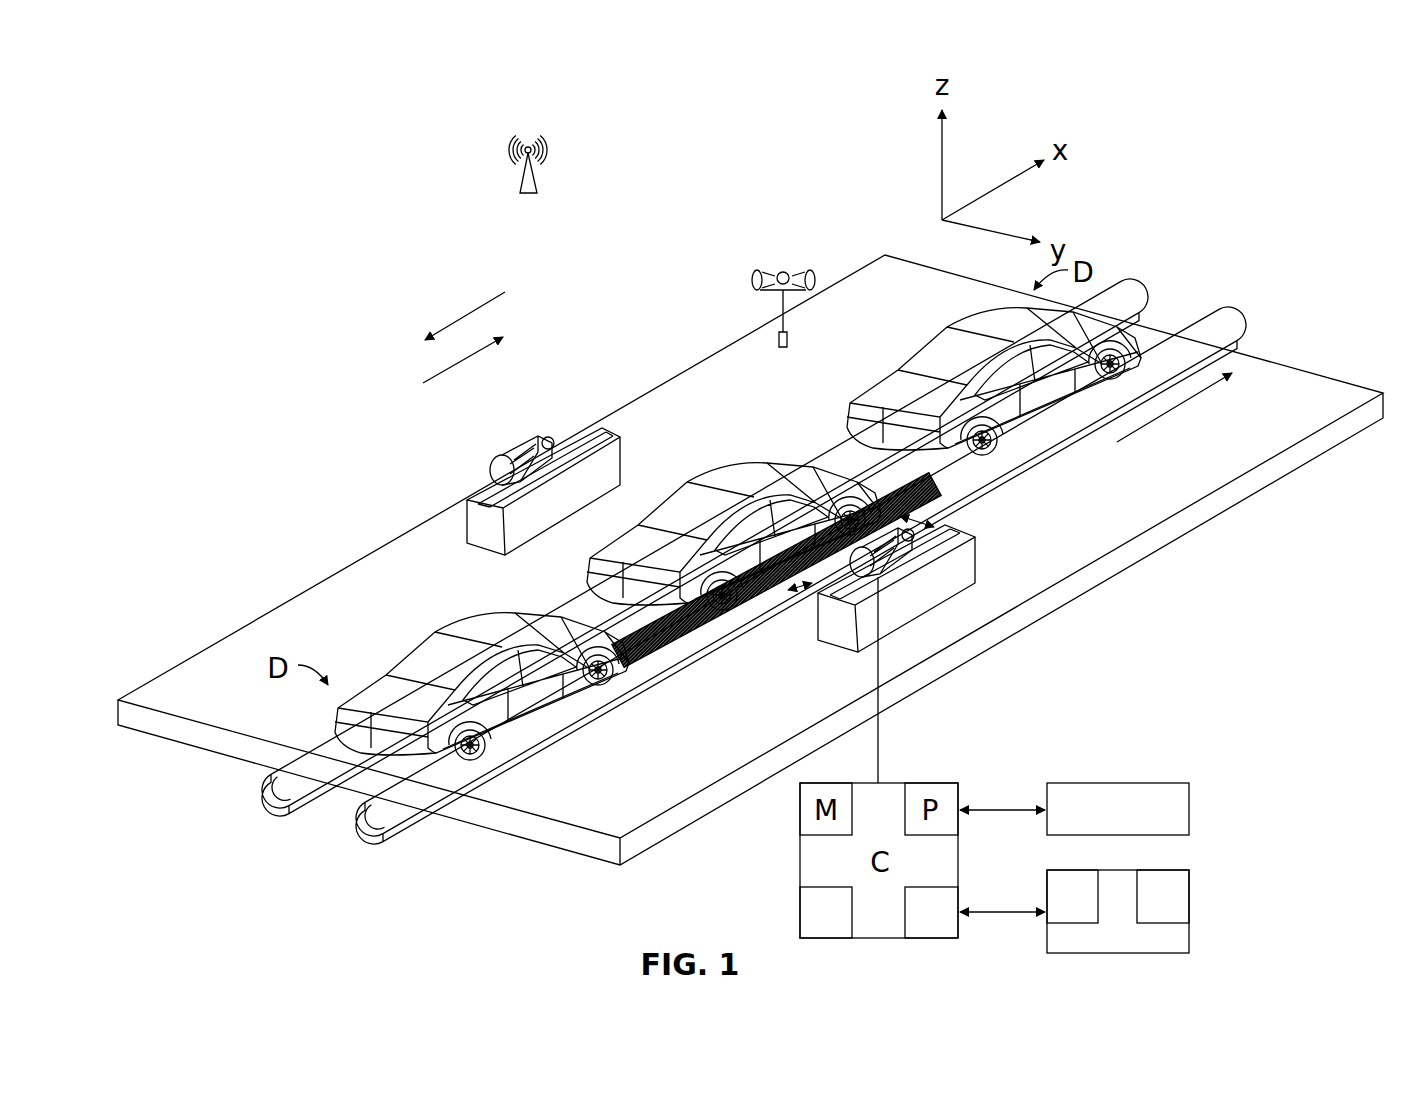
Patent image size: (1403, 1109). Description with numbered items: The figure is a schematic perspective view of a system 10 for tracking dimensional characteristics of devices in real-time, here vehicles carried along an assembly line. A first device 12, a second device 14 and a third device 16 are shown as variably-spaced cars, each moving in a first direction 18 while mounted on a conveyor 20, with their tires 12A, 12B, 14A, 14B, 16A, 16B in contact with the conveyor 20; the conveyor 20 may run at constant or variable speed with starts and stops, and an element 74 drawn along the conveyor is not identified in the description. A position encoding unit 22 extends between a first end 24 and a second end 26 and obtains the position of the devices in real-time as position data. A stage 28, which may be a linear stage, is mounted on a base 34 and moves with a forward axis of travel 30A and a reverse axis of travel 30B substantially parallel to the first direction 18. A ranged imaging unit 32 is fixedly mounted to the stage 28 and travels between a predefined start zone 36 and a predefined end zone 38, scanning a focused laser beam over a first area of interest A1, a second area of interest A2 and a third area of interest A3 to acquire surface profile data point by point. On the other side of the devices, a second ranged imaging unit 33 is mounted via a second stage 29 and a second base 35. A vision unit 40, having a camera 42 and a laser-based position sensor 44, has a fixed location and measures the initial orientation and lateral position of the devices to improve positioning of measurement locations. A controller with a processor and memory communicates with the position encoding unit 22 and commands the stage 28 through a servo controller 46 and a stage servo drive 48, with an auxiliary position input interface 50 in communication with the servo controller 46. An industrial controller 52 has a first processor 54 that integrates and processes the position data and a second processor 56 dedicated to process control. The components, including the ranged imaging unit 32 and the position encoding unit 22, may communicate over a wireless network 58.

The system 10 is at (1285, 580).
The first device 12 is at (734, 546).
The tire 12A is at (845, 502).
The tire 12B is at (735, 614).
The second device 14 is at (517, 739).
The tire 14A is at (664, 690).
The tire 14B is at (474, 764).
The third device 16 is at (1012, 354).
The tire 16A is at (1138, 340).
The tire 16B is at (1003, 447).
The first direction 18 is at (1177, 410).
The conveyor 20 is at (374, 842).
The position encoding unit 22 is at (628, 688).
The first end 24 is at (596, 706).
The second end 26 is at (958, 488).
The stage 28 is at (911, 635).
The second stage 29 is at (480, 490).
The forward axis of travel 30A is at (462, 363).
The reverse axis of travel 30B is at (462, 315).
The ranged imaging unit 32 is at (892, 565).
The second ranged imaging unit 33 is at (497, 437).
The base 34 is at (840, 642).
The second base 35 is at (467, 525).
The predefined start zone 36 is at (810, 594).
The predefined end zone 38 is at (918, 520).
The vision unit 40 is at (782, 267).
The camera 42 is at (750, 285).
The laser-based position sensor 44 is at (817, 285).
The servo controller 46 is at (826, 912).
The stage servo drive 48 is at (931, 912).
The auxiliary position input interface 50 is at (1117, 783).
The industrial controller 52 is at (1118, 894).
The first processor 54 is at (1072, 896).
The second processor 56 is at (1117, 870).
The wireless network 58 is at (572, 118).
The conveyor belt 74 is at (684, 654).
The first area of interest A1 is at (528, 728).
The second area of interest A2 is at (594, 674).
The third area of interest A3 is at (497, 722).